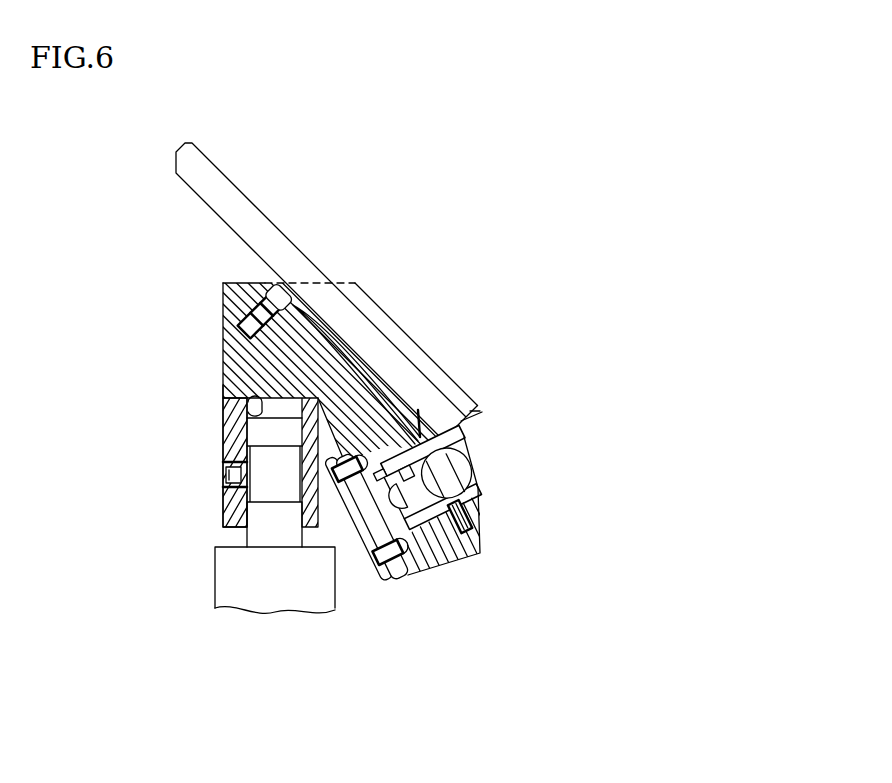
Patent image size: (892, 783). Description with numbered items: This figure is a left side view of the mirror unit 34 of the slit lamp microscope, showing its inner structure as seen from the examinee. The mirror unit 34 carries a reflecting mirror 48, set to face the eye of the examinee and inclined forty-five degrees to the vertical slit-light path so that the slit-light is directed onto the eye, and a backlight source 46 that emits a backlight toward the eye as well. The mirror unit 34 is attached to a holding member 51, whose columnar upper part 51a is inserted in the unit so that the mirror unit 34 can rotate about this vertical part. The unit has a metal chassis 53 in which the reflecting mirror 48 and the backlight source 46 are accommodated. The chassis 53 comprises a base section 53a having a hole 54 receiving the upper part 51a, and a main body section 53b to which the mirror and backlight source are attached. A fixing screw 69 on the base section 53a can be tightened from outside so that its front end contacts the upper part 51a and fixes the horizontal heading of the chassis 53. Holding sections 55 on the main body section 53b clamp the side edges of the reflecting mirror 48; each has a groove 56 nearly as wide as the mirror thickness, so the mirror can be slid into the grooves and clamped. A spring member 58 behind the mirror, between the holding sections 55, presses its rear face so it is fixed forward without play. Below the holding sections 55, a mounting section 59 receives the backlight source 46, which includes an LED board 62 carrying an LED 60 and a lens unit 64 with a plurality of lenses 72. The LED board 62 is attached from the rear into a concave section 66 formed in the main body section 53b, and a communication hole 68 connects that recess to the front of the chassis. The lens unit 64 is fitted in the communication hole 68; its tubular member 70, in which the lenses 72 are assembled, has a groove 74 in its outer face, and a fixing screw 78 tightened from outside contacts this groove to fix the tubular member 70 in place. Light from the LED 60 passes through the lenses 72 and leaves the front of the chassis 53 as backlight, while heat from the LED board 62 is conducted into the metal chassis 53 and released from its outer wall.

The mirror unit 34 is at (440, 157).
The backlight source 46 is at (588, 540).
The reflecting mirror 48 is at (300, 247).
The holding member 51 is at (265, 578).
The upper part of the holding member 51a is at (267, 515).
The metal chassis 53 is at (203, 312).
The base section 53a is at (235, 443).
The main body section 53b is at (223, 282).
The hole 54 is at (223, 388).
The holding sections 55 is at (345, 300).
The groove 56 is at (383, 350).
The spring member 58 is at (343, 342).
The mounting section 59 is at (440, 557).
The LED 60 is at (390, 583).
The LED board 62 is at (367, 547).
The lens unit 64 is at (483, 483).
The concave section 66 is at (437, 570).
The communication hole 68 is at (478, 495).
The fixing screw 69 is at (232, 478).
The tubular member 70 is at (458, 430).
The lenses 72 is at (460, 567).
The groove 74 is at (410, 462).
The fixing screw 78 is at (485, 553).